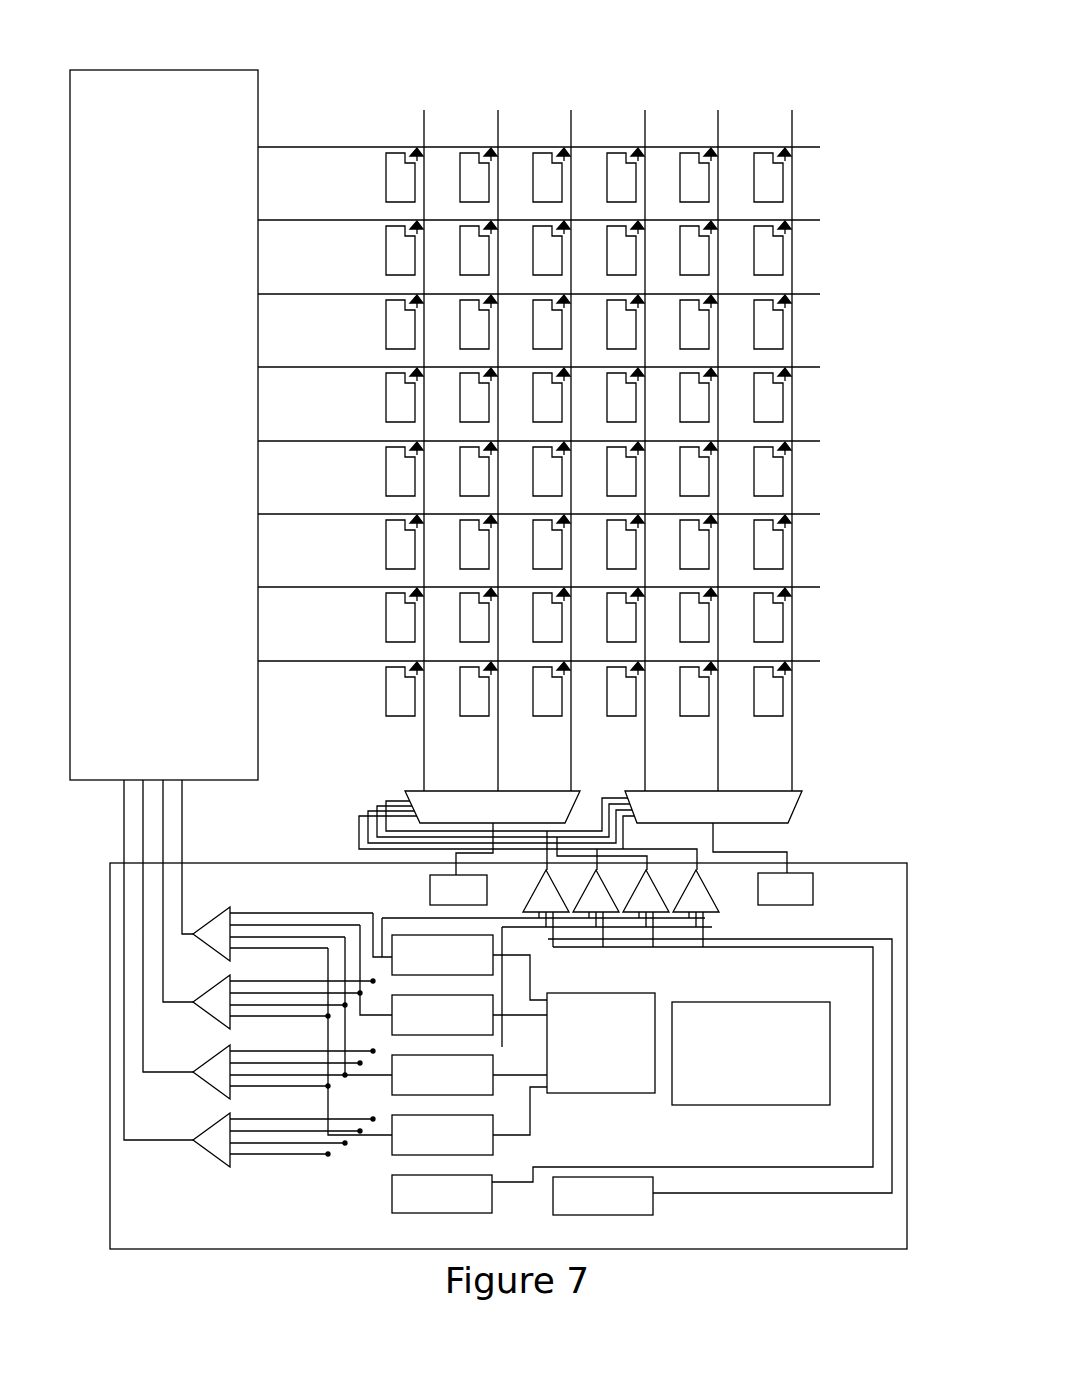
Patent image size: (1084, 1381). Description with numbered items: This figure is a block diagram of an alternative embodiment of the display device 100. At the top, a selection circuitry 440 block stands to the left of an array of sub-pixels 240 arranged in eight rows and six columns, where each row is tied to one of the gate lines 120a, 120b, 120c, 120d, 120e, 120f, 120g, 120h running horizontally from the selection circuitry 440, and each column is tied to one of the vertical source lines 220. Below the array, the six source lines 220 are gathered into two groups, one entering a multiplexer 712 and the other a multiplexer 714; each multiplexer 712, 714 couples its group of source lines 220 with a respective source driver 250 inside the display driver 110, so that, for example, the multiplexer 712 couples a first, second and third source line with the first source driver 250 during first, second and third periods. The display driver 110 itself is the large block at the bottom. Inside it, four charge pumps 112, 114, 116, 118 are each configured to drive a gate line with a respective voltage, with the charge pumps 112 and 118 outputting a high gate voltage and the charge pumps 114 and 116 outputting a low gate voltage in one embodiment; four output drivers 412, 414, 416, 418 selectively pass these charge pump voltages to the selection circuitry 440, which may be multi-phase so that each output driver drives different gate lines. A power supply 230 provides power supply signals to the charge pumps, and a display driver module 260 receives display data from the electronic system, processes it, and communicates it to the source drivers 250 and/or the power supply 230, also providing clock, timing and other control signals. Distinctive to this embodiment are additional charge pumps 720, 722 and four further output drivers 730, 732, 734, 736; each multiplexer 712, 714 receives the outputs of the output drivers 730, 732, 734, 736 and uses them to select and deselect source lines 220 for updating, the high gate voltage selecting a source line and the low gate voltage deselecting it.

The display device 100 is at (163, 30).
The selection circuitry 440 is at (134, 112).
The source lines 220 is at (812, 115).
The sub-pixels 240 is at (412, 235).
The gate line 120a is at (837, 144).
The gate line 120b is at (837, 217).
The gate line 120c is at (837, 291).
The gate line 120d is at (837, 364).
The gate line 120e is at (837, 438).
The gate line 120f is at (837, 511).
The gate line 120g is at (837, 584).
The gate line 120h is at (837, 658).
The multiplexer 712 is at (472, 817).
The multiplexer 714 is at (692, 817).
The source drivers 250 is at (438, 901).
The output driver 730 is at (552, 900).
The output driver 732 is at (602, 900).
The output driver 734 is at (652, 900).
The output driver 736 is at (702, 900).
The output driver 412 is at (208, 930).
The output driver 414 is at (208, 1000).
The output driver 416 is at (212, 1145).
The output driver 418 is at (215, 1078).
The charge pump 112 is at (421, 967).
The charge pump 114 is at (421, 1027).
The charge pump 116 is at (421, 1087).
The charge pump 118 is at (421, 1147).
The power supply 230 is at (580, 1054).
The display driver module 260 is at (730, 1064).
The charge pump 720 is at (421, 1205).
The charge pump 722 is at (582, 1207).
The display driver 110 is at (840, 1240).